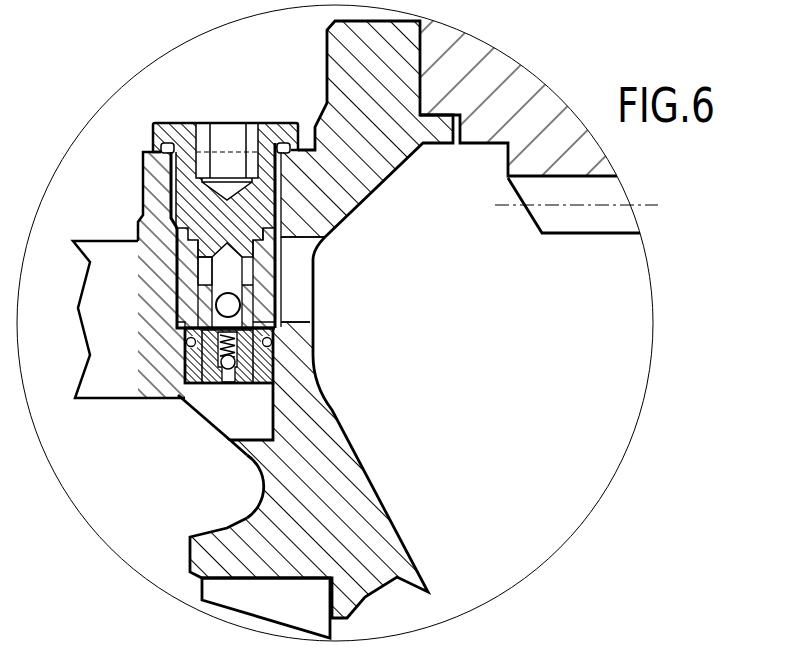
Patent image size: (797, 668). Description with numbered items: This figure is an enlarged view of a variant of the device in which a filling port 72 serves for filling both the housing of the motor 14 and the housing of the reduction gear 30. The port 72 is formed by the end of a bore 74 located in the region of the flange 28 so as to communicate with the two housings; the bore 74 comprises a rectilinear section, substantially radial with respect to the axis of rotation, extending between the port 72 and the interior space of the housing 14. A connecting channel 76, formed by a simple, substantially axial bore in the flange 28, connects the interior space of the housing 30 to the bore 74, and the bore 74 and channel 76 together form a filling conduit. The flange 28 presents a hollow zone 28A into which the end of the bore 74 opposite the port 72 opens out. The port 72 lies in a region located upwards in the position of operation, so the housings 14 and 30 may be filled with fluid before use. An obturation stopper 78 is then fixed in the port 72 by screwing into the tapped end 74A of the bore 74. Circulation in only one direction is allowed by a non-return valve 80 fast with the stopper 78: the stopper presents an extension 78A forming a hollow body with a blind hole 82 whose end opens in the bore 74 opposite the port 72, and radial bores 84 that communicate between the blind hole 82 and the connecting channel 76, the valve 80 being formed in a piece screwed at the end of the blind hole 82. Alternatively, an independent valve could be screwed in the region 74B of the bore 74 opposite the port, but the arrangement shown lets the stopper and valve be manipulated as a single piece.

The housing of the motor 14 is at (100, 257).
The flange 28 is at (343, 473).
The hollow zone 28A is at (250, 470).
The housing of the reduction gear 30 is at (498, 80).
The filling port 72 is at (152, 147).
The bore 74 is at (180, 328).
The tapped end of the bore 74A is at (265, 205).
The region of the bore opposite the port 74B is at (265, 400).
The connecting channel 76 is at (297, 258).
The obturation stopper 78 is at (227, 150).
The extension forming a hollow body 78A is at (277, 350).
The non-return valve 80 is at (228, 387).
The blind hole 82 is at (240, 303).
The radial bores 84 is at (200, 278).